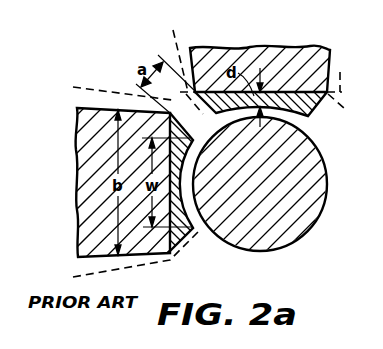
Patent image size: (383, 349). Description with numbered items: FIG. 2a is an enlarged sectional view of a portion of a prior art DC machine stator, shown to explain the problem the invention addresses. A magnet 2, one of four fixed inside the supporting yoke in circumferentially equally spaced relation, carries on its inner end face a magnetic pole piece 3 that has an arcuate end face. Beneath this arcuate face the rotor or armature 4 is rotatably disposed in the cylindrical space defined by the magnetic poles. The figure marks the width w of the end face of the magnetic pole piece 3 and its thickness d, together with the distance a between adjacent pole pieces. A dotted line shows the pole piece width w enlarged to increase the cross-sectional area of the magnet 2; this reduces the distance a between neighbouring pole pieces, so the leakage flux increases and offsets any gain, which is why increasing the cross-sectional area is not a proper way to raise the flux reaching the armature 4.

The magnet 2 is at (300, 58).
The magnetic pole piece 3 is at (308, 107).
The armature 4 is at (300, 222).